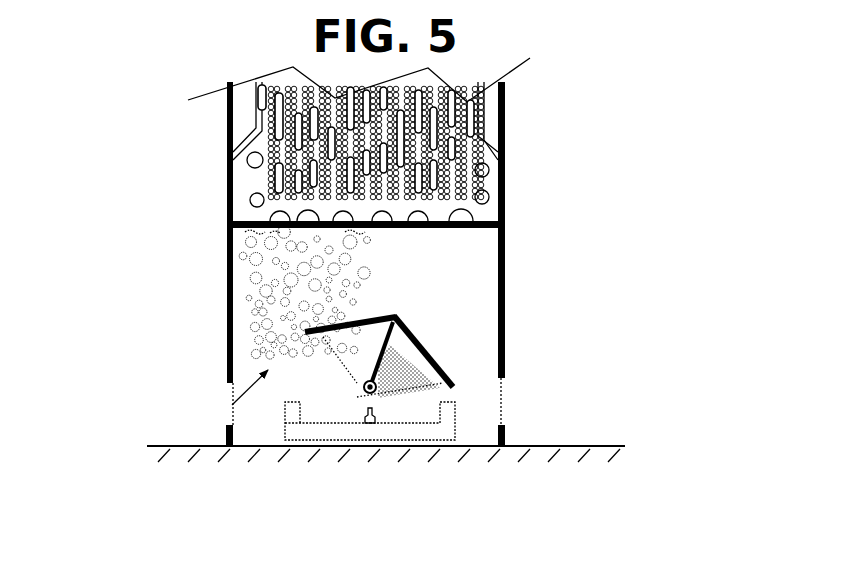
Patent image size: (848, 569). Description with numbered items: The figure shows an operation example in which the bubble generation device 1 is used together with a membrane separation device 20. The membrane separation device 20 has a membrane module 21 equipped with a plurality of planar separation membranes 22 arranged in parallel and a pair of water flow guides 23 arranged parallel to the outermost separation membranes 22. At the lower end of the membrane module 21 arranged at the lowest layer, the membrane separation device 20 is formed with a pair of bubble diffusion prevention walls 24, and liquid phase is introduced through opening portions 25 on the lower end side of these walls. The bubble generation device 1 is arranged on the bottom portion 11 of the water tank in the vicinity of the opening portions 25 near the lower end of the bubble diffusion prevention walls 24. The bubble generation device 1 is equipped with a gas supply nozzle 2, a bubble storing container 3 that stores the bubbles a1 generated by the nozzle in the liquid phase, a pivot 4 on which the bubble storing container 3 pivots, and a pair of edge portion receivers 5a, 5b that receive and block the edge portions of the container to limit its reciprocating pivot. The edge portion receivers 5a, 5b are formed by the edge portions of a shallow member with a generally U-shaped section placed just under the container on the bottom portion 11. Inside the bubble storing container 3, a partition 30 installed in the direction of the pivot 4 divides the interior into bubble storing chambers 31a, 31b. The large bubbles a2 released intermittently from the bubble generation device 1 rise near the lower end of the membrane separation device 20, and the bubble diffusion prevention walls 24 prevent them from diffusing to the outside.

The membrane separation device 20 is at (395, 252).
The membrane module 21 is at (268, 146).
The separation membrane 22 is at (260, 167).
The water flow guide 23 is at (262, 122).
The bubble diffusion prevention wall 24 is at (227, 264).
The opening portion 25 is at (232, 404).
The bubble generation device 1 is at (438, 322).
The bubble storing container 3 is at (439, 331).
The partition 30 is at (375, 350).
The bubble storing chamber 31a is at (358, 348).
The bubble storing chamber 31b is at (445, 372).
The pivot 4 is at (364, 386).
The gas supply nozzle 2 is at (366, 410).
The edge portion receiver 5a is at (288, 420).
The edge portion receiver 5b is at (457, 432).
The bottom portion 11 is at (597, 447).
The bubbles a1 is at (390, 400).
The large bubbles a2 is at (287, 283).